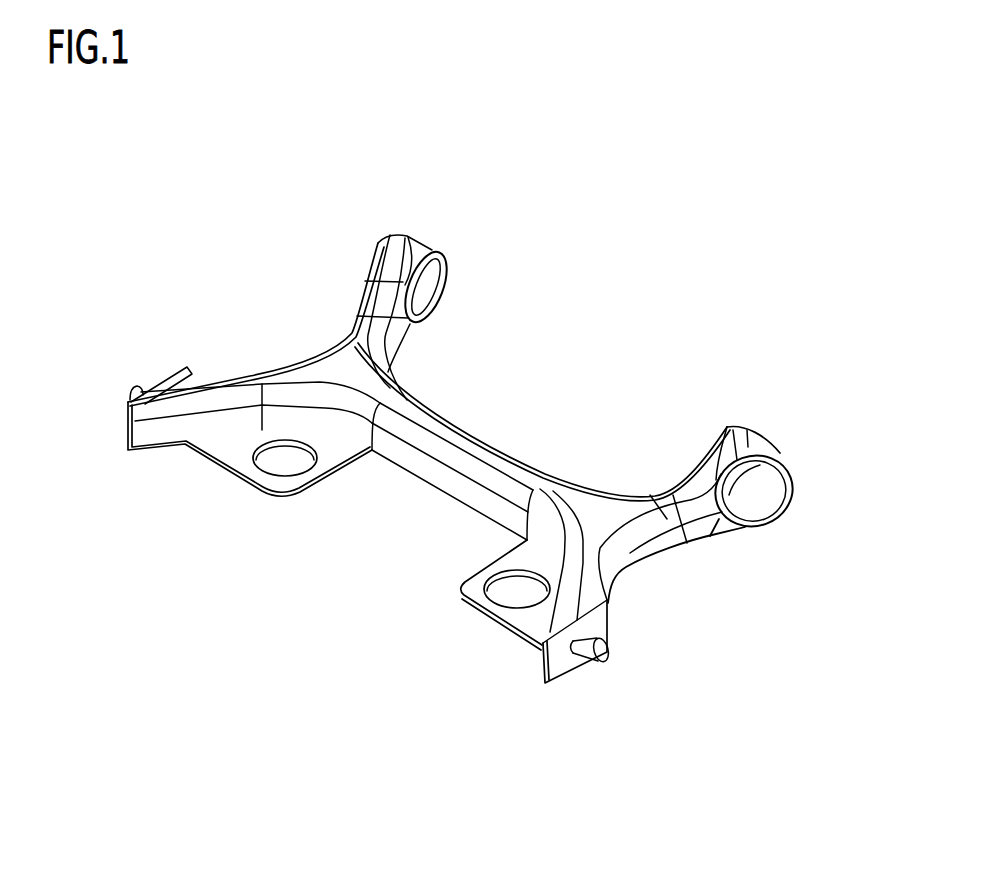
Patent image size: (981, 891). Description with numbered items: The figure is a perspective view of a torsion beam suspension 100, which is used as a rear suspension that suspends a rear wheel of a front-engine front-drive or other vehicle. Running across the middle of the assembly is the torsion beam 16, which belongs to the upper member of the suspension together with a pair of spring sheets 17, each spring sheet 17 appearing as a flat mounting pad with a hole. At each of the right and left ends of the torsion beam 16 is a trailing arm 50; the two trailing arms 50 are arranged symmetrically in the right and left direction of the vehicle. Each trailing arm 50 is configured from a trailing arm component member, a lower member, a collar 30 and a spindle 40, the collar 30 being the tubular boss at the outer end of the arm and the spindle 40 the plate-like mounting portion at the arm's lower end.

The torsion beam suspension 100 is at (125, 135).
The collar 30 is at (430, 285).
The trailing arm 50 is at (400, 372).
The torsion beam 16 is at (437, 477).
The spindle 40 is at (126, 428).
The spring sheet 17 is at (267, 482).